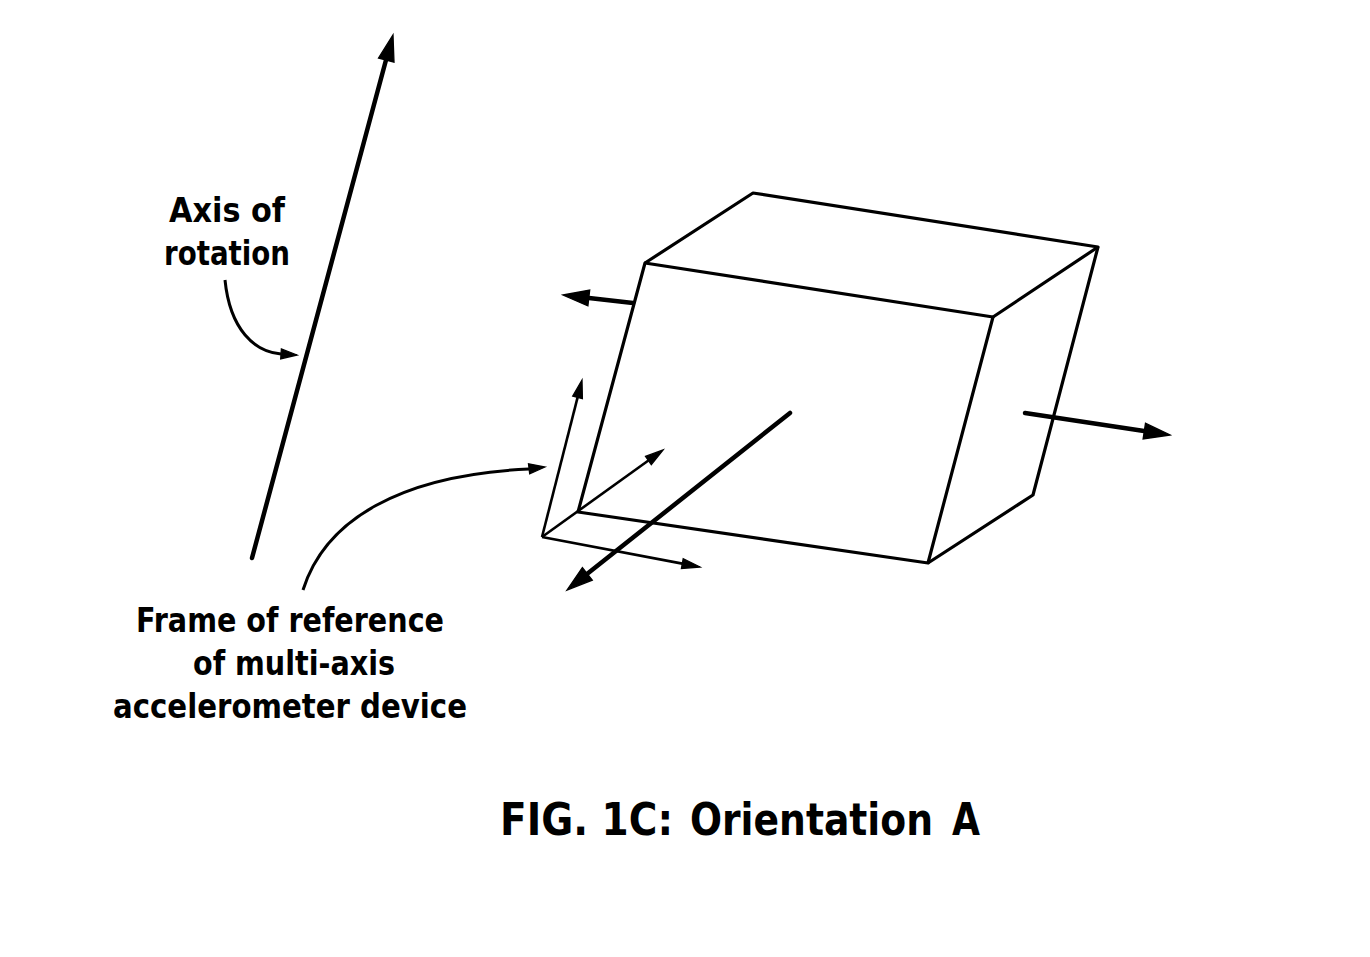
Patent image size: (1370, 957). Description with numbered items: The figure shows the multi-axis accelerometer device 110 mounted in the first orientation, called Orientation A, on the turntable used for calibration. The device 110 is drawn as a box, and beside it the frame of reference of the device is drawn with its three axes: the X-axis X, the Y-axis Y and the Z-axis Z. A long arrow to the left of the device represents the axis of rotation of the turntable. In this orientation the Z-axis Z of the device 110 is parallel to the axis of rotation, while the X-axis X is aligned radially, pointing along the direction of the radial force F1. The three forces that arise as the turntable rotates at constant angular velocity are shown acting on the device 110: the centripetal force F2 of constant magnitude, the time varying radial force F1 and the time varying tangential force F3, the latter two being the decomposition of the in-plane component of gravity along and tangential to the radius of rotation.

The multi-axis accelerometer device 110 is at (1039, 386).
The radial force F1 is at (1126, 438).
The centripetal force F2 is at (567, 292).
The tangential force F3 is at (651, 520).
The X-axis of the multi-axis accelerometer device X is at (637, 564).
The Y-axis of the multi-axis accelerometer device Y is at (616, 485).
The Z-axis of the multi-axis accelerometer device Z is at (569, 441).